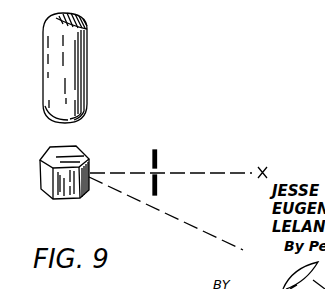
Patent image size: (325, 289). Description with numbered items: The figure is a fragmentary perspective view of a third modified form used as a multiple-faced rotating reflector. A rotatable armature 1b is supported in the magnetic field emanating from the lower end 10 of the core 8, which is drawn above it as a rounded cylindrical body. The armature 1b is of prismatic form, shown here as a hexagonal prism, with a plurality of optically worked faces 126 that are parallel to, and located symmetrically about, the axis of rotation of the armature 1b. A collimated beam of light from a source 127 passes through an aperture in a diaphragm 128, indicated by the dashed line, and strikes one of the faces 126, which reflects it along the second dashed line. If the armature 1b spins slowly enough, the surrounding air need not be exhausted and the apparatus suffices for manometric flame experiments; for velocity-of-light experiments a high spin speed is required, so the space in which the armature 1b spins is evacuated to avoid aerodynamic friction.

The core 8 is at (66, 88).
The lower end of core 10 is at (86, 113).
The rotatable armature 1b is at (63, 155).
The optically worked faces 126 is at (67, 188).
The source 127 is at (265, 167).
The diaphragm 128 is at (156, 152).